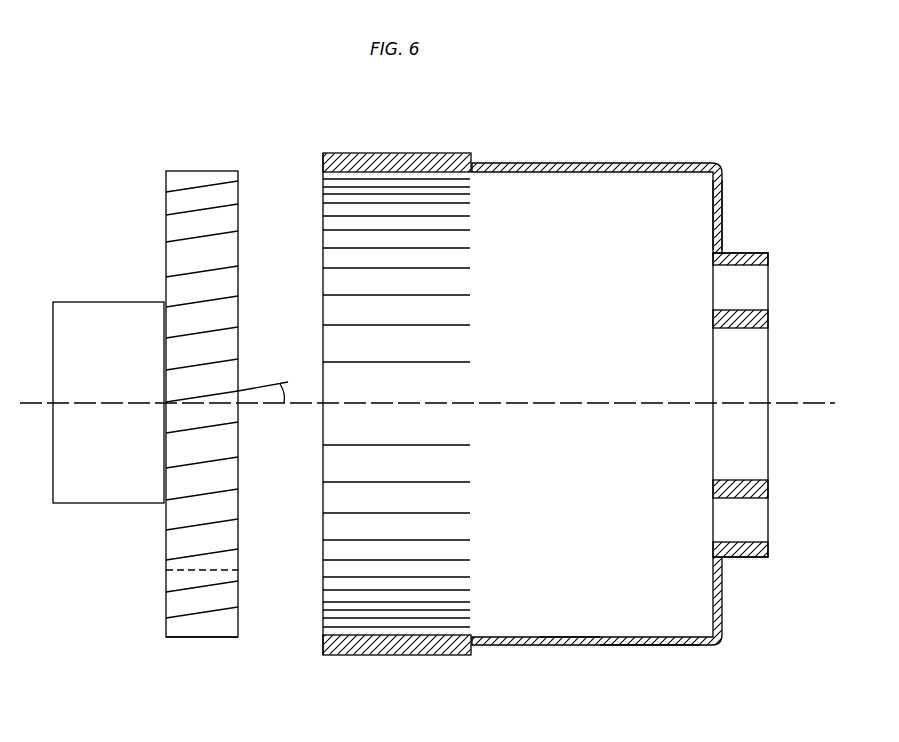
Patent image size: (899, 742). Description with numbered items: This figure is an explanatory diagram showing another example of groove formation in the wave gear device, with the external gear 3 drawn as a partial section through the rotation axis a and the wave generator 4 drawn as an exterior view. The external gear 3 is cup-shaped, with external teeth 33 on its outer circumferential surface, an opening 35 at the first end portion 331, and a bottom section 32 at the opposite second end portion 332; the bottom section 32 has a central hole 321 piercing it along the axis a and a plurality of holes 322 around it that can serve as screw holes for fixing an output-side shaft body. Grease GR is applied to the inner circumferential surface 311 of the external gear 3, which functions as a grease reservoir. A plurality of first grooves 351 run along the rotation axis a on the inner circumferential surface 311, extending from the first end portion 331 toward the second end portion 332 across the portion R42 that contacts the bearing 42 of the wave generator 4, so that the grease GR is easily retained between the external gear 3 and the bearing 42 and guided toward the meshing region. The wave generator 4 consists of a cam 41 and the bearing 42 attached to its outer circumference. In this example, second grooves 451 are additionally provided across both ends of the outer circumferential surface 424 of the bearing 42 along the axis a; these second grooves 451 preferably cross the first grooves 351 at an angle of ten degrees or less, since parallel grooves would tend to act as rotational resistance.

The external gear 3 is at (616, 163).
The wave generator 4 is at (122, 298).
The rotation axis a is at (27, 400).
The bottom section 32 is at (725, 212).
The external teeth 33 is at (393, 152).
The opening 35 is at (323, 198).
The cam 41 is at (162, 540).
The bearing 42 is at (163, 627).
The inner circumferential surface 311 is at (643, 637).
The hole 321 is at (752, 330).
The holes 322 is at (752, 267).
The first end portion 331 is at (323, 430).
The second end portion 332 is at (768, 426).
The first grooves 351 is at (495, 628).
The outer circumferential surface 424 is at (197, 640).
The second grooves 451 is at (226, 294).
The grease GR is at (563, 637).
The portion in contact with the bearing R42 is at (418, 683).